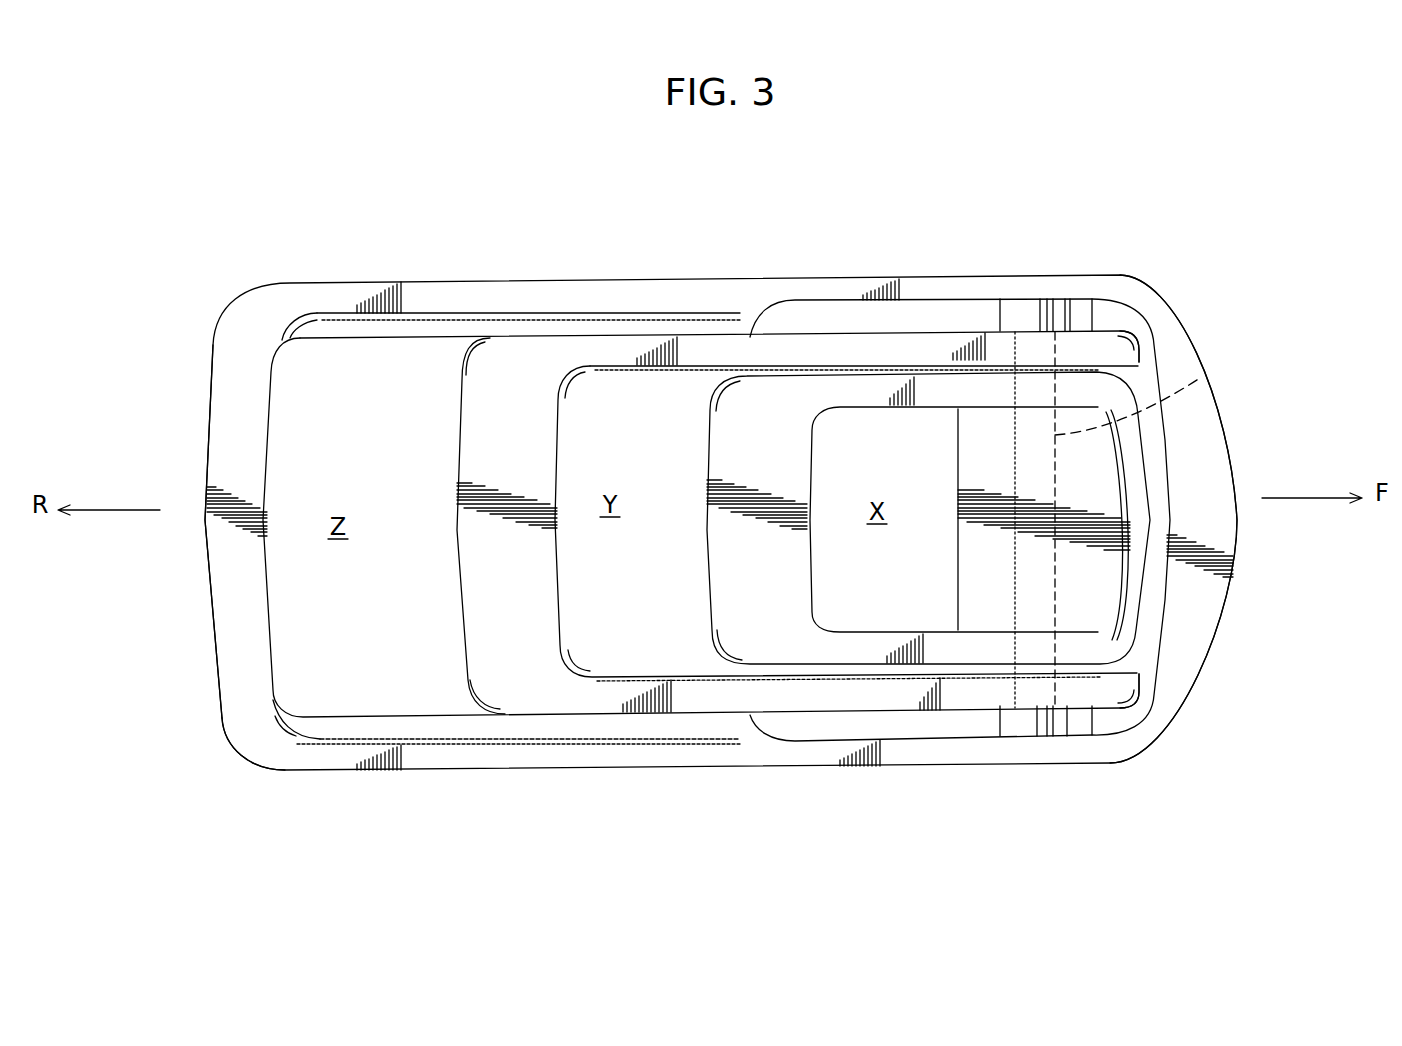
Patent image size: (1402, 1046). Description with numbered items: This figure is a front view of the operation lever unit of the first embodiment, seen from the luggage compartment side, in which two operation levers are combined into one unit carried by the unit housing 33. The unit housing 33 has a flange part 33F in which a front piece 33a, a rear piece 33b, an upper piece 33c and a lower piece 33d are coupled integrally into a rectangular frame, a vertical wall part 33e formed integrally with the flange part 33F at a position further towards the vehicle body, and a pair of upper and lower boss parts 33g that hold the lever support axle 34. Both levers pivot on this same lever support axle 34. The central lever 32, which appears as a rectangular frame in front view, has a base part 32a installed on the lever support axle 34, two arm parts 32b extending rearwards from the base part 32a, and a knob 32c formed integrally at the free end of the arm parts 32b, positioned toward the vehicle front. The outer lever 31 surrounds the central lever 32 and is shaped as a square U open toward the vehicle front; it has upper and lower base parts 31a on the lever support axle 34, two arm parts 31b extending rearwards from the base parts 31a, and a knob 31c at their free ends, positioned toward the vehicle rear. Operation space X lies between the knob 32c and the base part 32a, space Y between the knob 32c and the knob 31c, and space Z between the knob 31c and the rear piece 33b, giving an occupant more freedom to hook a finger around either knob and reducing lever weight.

The outer lever 31 is at (545, 322).
The base parts 31a is at (1082, 343).
The arm parts 31b is at (927, 290).
The knob 31c is at (483, 407).
The central lever 32 is at (841, 353).
The base part 32a is at (1103, 593).
The arm parts 32b is at (930, 397).
The knob 32c is at (732, 595).
The unit housing 33 is at (427, 268).
The front piece 33a is at (1167, 333).
The rear piece 33b is at (237, 610).
The upper piece 33c is at (624, 295).
The lower piece 33d is at (579, 760).
The vertical wall part 33e is at (317, 687).
The flange part 33F is at (233, 415).
The boss parts 33g is at (986, 296).
The lever support axle 34 is at (1200, 378).